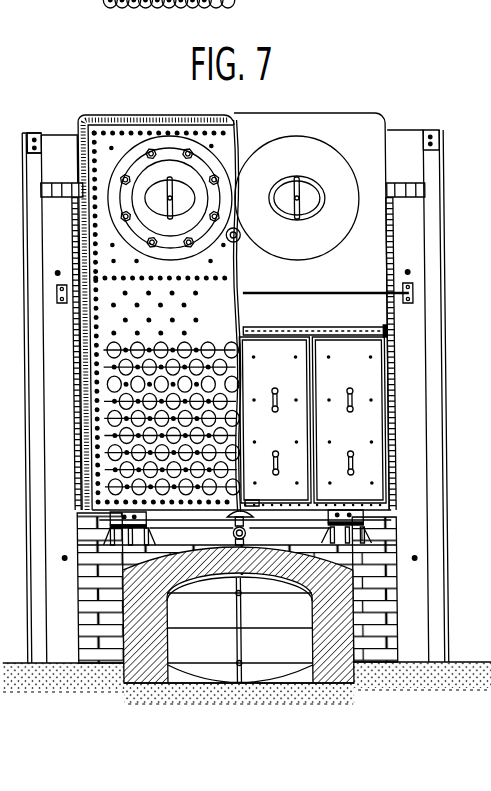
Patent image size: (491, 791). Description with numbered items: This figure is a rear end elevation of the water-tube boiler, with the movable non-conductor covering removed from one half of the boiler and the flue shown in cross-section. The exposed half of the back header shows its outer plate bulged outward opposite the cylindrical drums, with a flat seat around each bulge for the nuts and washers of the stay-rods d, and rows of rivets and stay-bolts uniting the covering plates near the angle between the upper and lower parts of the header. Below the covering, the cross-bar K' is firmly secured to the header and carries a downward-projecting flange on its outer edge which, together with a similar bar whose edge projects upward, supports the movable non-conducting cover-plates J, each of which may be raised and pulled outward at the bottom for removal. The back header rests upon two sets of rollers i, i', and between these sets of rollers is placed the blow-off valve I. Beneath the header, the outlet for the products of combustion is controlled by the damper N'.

The stay-rods d is at (232, 207).
The cross-bar K' is at (315, 318).
The movable non-conducting cover-plates J is at (312, 420).
The rollers i' is at (308, 509).
The rollers i is at (140, 530).
The blow-off valve I is at (245, 533).
The damper N' is at (238, 615).